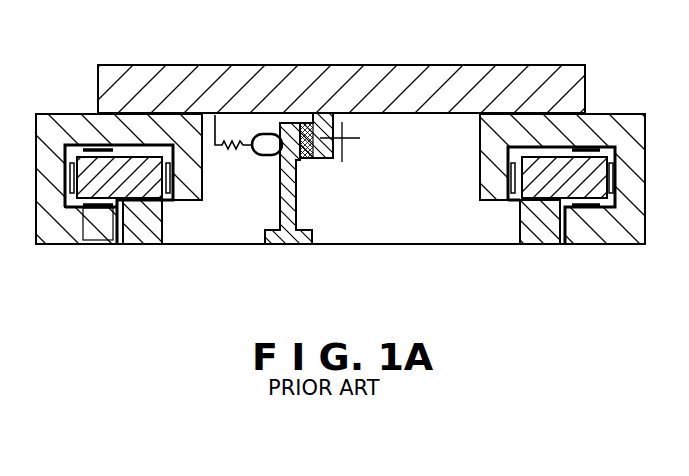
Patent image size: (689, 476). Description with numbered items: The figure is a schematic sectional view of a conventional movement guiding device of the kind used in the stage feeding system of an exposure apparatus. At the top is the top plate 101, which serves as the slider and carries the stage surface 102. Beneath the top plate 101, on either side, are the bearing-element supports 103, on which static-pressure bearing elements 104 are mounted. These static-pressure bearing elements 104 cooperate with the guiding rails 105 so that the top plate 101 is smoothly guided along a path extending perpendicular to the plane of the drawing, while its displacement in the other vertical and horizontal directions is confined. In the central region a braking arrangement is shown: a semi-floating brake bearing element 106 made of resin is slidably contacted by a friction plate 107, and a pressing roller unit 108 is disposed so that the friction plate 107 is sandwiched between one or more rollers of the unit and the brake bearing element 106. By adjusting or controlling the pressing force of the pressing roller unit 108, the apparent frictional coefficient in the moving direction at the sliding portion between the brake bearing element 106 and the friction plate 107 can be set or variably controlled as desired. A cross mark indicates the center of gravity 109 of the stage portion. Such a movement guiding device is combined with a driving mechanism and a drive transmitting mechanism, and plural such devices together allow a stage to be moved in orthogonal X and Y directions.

The top plate 101 is at (382, 88).
The stage surface 102 is at (452, 65).
The bearing-element supports 103 is at (187, 133).
The static-pressure bearing elements 104 is at (118, 195).
The guiding rails 105 is at (550, 175).
The semi-floating brake bearing element 106 is at (310, 137).
The friction plate 107 is at (288, 135).
The pressing roller unit 108 is at (262, 143).
The center of gravity of the stage portion 109 is at (345, 143).